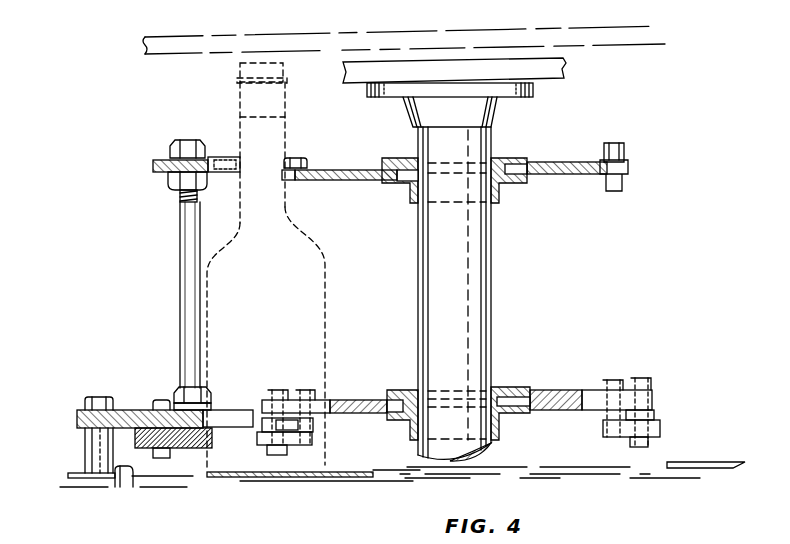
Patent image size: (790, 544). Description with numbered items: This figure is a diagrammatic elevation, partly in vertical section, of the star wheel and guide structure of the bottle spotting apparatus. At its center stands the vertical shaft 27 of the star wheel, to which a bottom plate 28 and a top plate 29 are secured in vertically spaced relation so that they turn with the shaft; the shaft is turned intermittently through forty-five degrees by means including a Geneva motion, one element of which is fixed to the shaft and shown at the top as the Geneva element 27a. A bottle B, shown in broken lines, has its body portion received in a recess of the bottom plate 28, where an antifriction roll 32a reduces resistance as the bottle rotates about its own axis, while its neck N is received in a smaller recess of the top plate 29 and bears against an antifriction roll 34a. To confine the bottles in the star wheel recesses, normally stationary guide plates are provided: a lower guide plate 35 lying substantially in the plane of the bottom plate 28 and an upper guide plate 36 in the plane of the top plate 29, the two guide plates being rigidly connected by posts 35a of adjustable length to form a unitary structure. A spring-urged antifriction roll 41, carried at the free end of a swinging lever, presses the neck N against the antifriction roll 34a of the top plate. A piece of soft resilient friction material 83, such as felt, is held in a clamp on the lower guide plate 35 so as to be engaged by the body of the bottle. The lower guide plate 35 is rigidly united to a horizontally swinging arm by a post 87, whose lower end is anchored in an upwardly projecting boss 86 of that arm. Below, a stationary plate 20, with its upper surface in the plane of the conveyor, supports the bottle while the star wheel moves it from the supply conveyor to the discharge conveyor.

The stationary plate 20 is at (363, 469).
The vertical shaft 27 is at (483, 303).
The Geneva motion element 27a is at (533, 92).
The bottom plate 28 is at (557, 390).
The top plate 29 is at (567, 164).
The antifriction roll 32a is at (652, 412).
The antifriction roll 34a is at (298, 158).
The lower guide plate 35 is at (130, 410).
The posts or columns 35a is at (195, 287).
The upper guide plate 36 is at (157, 174).
The antifriction roll 41 is at (219, 157).
The soft resilient friction material 83 is at (207, 440).
The boss 86 is at (129, 482).
The post 87 is at (103, 453).
The bottle B is at (305, 327).
The neck N is at (273, 147).